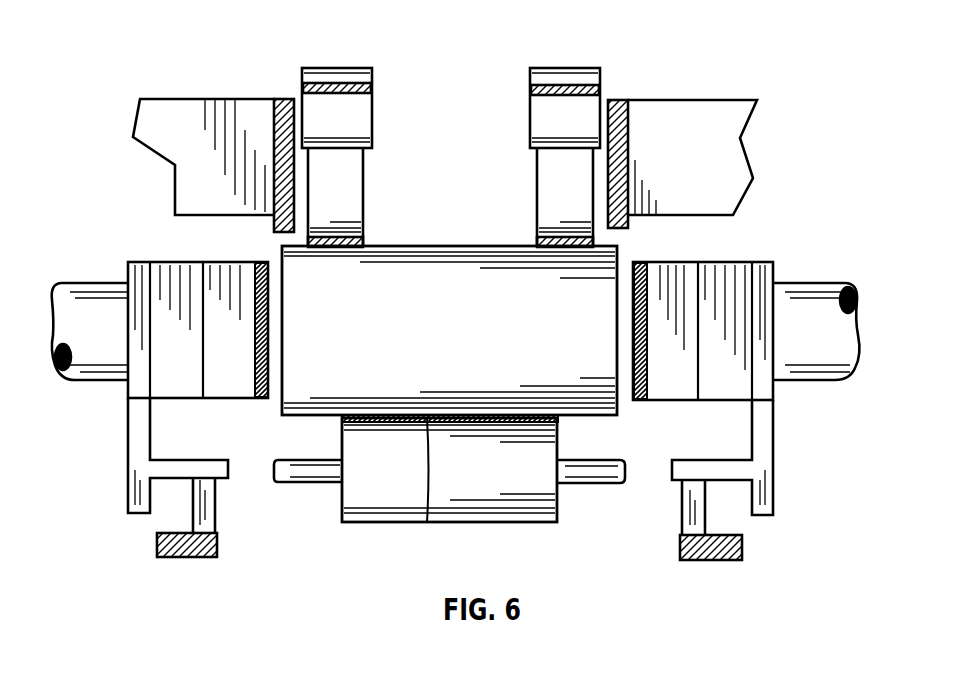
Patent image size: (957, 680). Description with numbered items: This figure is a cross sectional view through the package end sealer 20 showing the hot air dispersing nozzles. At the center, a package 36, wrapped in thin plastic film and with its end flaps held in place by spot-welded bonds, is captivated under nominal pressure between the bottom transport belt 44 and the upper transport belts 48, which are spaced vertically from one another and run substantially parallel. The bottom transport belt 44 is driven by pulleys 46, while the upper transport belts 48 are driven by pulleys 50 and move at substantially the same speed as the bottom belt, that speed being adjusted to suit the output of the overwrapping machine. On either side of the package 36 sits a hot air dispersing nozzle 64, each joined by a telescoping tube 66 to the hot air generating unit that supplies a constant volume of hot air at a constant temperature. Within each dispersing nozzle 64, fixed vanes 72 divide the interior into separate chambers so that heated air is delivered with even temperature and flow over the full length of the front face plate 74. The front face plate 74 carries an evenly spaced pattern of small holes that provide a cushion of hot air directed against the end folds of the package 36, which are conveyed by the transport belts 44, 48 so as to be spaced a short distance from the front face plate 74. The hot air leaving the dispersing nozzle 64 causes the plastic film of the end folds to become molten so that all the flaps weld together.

The package end sealer 20 is at (200, 50).
The package 36 is at (617, 247).
The bottom transport belt 44 is at (427, 425).
The pulleys 46 is at (557, 500).
The upper transport belts 48 is at (370, 86).
The pulleys 50 is at (358, 72).
The hot air dispersing nozzle 64 is at (170, 262).
The telescoping tube 66 is at (95, 284).
The fixed vanes 72 is at (164, 384).
The front face plate 74 is at (253, 375).